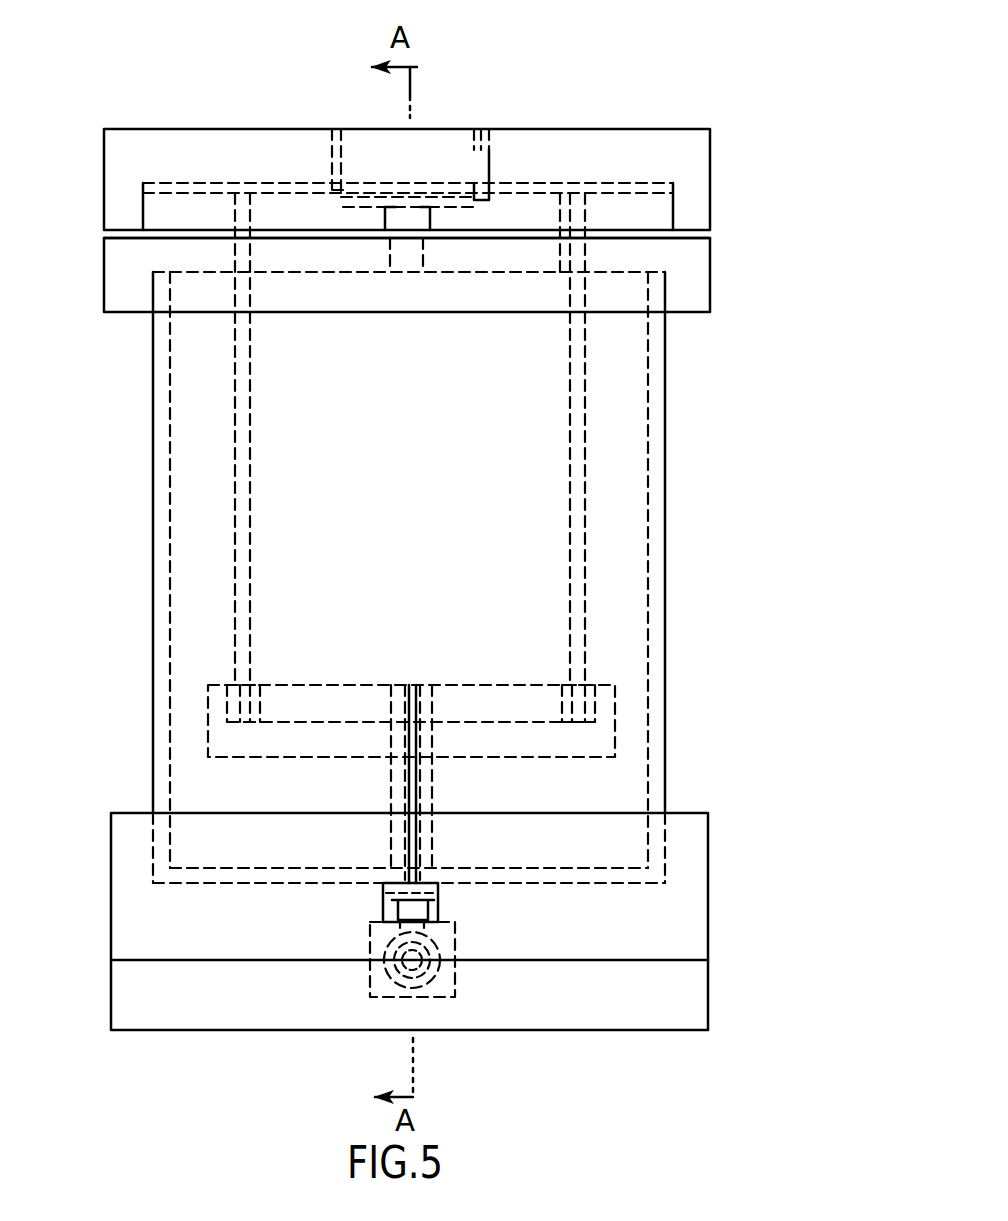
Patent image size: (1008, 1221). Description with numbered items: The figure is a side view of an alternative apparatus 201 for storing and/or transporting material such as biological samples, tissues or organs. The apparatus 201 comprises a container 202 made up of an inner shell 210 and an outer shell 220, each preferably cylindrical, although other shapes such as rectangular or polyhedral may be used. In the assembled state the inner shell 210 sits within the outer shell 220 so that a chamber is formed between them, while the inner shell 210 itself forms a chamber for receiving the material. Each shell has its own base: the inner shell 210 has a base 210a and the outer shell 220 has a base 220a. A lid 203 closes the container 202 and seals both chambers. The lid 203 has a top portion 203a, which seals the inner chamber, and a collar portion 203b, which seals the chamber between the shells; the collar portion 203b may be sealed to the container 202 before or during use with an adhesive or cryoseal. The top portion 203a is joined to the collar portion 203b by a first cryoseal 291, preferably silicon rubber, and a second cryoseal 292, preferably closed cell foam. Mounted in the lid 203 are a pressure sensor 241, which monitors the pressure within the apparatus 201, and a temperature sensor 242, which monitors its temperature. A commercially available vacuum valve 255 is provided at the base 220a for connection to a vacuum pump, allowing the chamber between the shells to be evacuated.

The apparatus 201 is at (748, 68).
The container 202 is at (742, 506).
The lid 203 is at (820, 177).
The top portion 203a is at (710, 167).
The collar portion 203b is at (104, 268).
The inner shell 210 is at (585, 407).
The base 210a is at (615, 707).
The outer shell 220 is at (665, 431).
The base 220a is at (707, 840).
The pressure sensor 241 is at (478, 128).
The temperature sensor 242 is at (492, 150).
The vacuum valve 255 is at (353, 997).
The first cryoseal 291 is at (160, 183).
The second cryoseal 292 is at (125, 230).